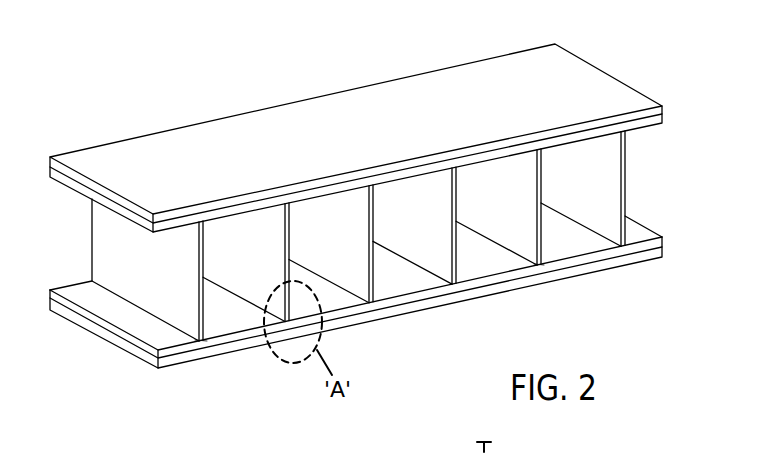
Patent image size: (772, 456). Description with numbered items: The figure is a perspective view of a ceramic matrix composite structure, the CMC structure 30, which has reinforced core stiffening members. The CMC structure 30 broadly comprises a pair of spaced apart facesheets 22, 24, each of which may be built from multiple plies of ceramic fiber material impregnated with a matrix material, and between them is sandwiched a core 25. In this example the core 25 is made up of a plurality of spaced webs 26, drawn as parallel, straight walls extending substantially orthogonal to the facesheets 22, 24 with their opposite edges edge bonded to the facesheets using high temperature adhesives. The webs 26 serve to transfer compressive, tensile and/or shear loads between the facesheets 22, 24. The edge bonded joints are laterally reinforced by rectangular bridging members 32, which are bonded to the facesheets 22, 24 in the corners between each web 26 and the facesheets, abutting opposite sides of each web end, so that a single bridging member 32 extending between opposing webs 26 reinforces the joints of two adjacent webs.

The CMC structure 30 is at (122, 79).
The facesheet 22 is at (100, 162).
The facesheet 24 is at (150, 358).
The web 26 is at (110, 242).
The core 25 is at (670, 123).
The bridging member 32 is at (222, 319).